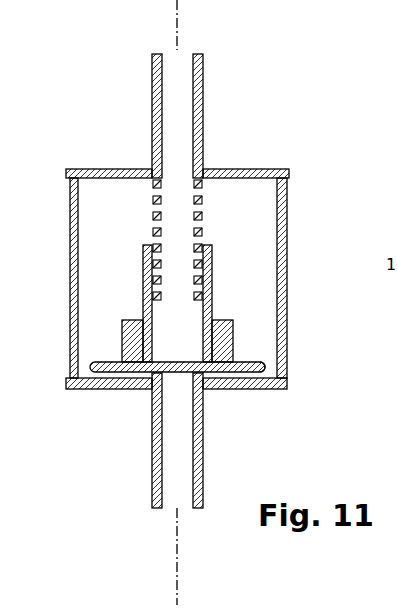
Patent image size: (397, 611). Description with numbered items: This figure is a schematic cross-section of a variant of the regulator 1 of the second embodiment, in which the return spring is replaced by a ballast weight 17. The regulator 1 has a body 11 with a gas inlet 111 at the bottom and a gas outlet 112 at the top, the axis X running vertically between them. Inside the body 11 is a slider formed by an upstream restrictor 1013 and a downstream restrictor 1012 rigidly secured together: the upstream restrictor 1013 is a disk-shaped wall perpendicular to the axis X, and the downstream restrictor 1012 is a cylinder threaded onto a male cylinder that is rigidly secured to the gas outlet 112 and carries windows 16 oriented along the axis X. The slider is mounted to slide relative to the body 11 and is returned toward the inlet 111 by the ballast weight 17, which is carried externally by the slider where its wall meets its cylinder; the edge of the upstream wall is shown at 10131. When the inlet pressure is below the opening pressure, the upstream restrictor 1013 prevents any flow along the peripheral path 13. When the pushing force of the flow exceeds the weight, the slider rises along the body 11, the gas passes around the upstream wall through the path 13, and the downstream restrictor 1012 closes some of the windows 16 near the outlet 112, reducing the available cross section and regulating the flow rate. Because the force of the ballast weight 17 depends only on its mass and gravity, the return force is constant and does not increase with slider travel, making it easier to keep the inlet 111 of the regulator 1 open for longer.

The regulator 1 is at (72, 140).
The gas outlet 112 is at (163, 40).
The gas inlet 111 is at (165, 515).
The body 11 is at (258, 172).
The peripheral path 13 is at (268, 237).
The windows 16 is at (157, 190).
The downstream restrictor 1012 is at (143, 296).
The ballast weight 17 is at (233, 334).
The upstream restrictor 1013 is at (218, 366).
The rounded end of valve plate 10131 is at (263, 368).